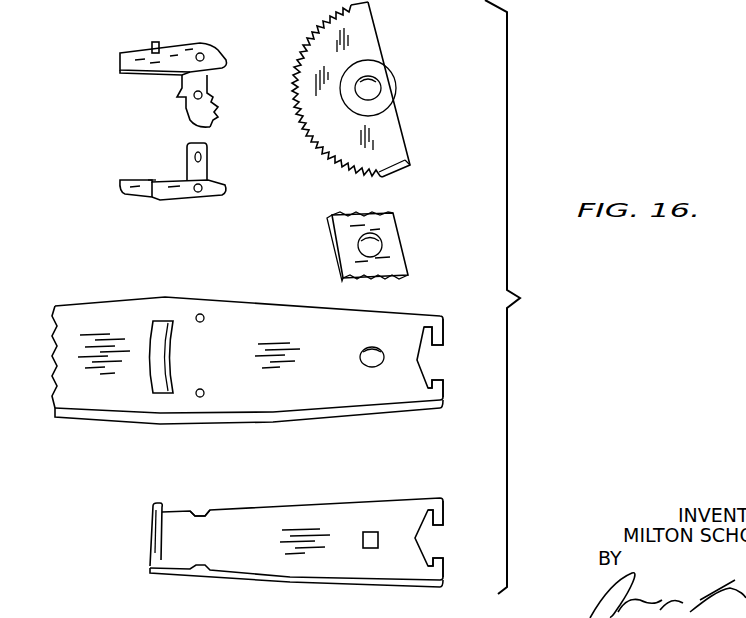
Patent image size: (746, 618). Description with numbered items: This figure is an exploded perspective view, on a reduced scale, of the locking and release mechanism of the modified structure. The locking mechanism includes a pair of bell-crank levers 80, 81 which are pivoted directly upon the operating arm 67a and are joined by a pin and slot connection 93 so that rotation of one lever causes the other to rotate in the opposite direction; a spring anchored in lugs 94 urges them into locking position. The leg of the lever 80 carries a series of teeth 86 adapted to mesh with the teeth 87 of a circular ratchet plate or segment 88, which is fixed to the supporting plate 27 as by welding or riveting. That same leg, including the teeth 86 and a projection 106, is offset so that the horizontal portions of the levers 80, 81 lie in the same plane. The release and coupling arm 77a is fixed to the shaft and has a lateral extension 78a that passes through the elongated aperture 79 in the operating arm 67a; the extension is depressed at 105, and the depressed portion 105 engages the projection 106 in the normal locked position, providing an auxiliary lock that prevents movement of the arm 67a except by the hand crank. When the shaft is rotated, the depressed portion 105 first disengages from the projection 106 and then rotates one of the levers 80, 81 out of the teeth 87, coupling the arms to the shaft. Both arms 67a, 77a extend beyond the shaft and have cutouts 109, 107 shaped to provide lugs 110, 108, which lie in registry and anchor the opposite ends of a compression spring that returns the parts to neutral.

The bell-crank lever 80 is at (130, 52).
The lugs 94 is at (156, 43).
The projection 106 is at (178, 97).
The teeth 86 is at (220, 110).
The bell-crank lever 81 is at (132, 180).
The pin and slot connection 93 is at (210, 158).
The teeth 87 is at (297, 70).
The circular ratchet plate or segment 88 is at (397, 140).
The supporting plate 27 is at (402, 257).
The elongated aperture 79 is at (165, 320).
The operating arm 67a is at (272, 309).
The cutout 109 is at (430, 360).
The lug 110 is at (440, 382).
The depressed portion 105 is at (162, 525).
The release and coupling arm 77a is at (300, 508).
The lateral extension 78a is at (150, 540).
The cutout 107 is at (427, 537).
The lug 108 is at (443, 562).